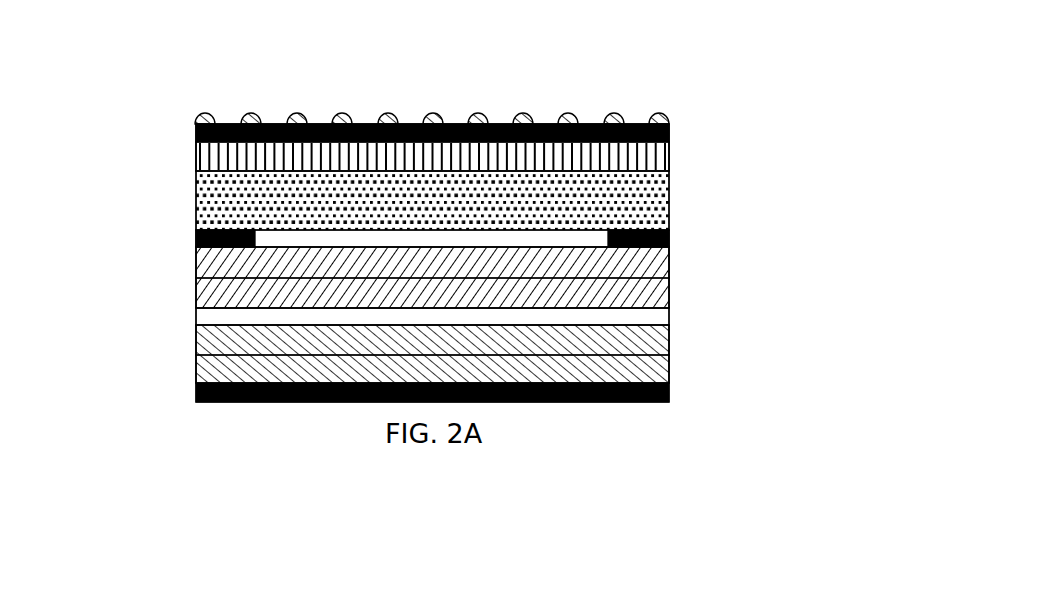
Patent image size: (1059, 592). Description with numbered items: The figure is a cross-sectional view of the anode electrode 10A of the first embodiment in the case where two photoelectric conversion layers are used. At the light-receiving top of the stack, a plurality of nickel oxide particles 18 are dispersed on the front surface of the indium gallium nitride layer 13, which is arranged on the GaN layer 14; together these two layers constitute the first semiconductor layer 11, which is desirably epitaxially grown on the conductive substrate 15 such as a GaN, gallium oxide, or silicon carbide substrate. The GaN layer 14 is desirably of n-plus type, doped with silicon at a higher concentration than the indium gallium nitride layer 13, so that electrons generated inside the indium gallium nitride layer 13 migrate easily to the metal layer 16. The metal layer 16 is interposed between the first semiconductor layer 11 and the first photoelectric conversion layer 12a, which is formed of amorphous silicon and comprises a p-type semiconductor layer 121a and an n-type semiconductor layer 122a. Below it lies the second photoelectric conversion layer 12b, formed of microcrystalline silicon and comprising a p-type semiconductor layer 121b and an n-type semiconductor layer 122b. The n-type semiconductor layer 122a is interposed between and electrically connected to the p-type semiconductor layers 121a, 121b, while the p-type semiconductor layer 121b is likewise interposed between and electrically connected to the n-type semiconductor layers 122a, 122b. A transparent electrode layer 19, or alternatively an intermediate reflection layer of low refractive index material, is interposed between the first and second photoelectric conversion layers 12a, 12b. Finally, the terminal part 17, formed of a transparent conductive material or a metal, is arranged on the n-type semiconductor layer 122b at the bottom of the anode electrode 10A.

The anode electrode 10A is at (630, 98).
The first semiconductor layer 11 is at (690, 125).
The InxGa1-xN layer 13 is at (198, 133).
The GaN layer 14 is at (198, 160).
The conductive substrate 15 is at (200, 200).
The metal layer 16 is at (200, 237).
The terminal part 17 is at (196, 393).
The nickel oxide particles 18 is at (667, 118).
The transparent electrode layer 19 is at (208, 317).
The first photoelectric conversion layer 12a is at (690, 248).
The second photoelectric conversion layer 12b is at (690, 326).
The p-type semiconductor layer 121a is at (212, 265).
The n-type semiconductor layer 122a is at (213, 293).
The p-type semiconductor layer 121b is at (215, 343).
The n-type semiconductor layer 122b is at (217, 368).